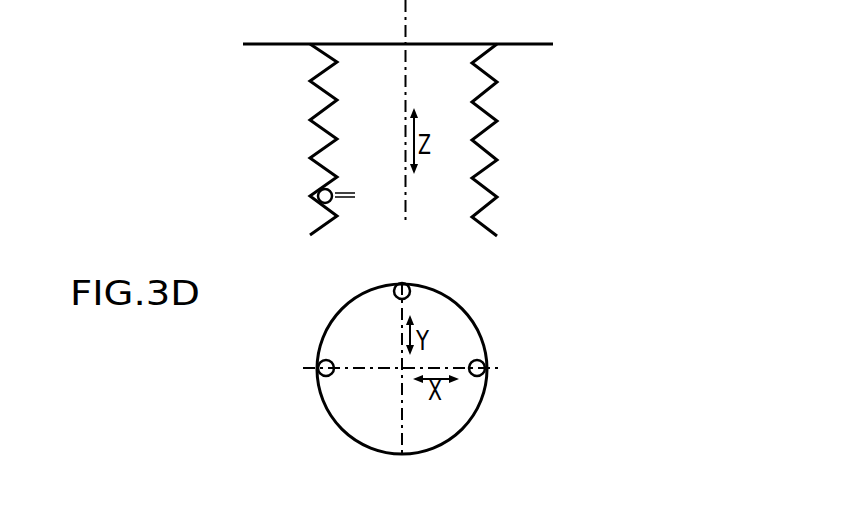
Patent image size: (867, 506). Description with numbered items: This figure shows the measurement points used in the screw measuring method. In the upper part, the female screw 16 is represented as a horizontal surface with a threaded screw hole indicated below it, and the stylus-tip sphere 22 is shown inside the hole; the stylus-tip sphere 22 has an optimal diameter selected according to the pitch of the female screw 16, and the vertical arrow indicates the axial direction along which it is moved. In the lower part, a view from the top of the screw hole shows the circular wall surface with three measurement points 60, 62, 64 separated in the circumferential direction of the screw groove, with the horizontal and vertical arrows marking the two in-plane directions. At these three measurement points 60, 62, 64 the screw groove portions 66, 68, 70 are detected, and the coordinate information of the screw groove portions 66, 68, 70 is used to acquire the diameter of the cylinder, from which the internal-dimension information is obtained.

The female screw 16 is at (537, 93).
The stylus-tip sphere 22 is at (318, 192).
The measurement point 60 is at (554, 352).
The measurement point 62 is at (258, 353).
The measurement point 64 is at (467, 277).
The screw groove portion 66 is at (486, 360).
The screw groove portion 68 is at (318, 364).
The screw groove portion 70 is at (410, 287).